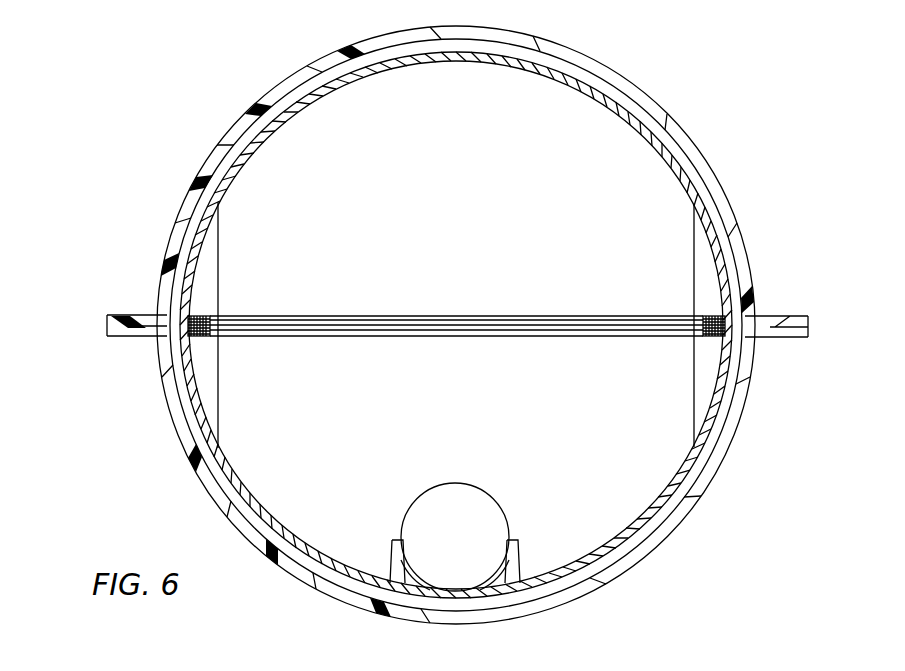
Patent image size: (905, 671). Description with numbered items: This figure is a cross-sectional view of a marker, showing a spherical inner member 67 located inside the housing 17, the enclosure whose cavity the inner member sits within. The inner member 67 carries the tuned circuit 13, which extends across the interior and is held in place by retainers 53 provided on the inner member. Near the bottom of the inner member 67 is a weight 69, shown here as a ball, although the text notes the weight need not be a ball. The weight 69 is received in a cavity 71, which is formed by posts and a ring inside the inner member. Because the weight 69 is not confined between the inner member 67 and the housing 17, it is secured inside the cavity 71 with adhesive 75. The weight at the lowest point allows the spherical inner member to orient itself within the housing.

The housing 17 is at (223, 132).
The spherical inner member 67 is at (622, 103).
The tuned circuit 13 is at (235, 313).
The retainers 53 is at (202, 367).
The weight 69 is at (483, 513).
The cavity 71 is at (395, 585).
The adhesive 75 is at (503, 580).